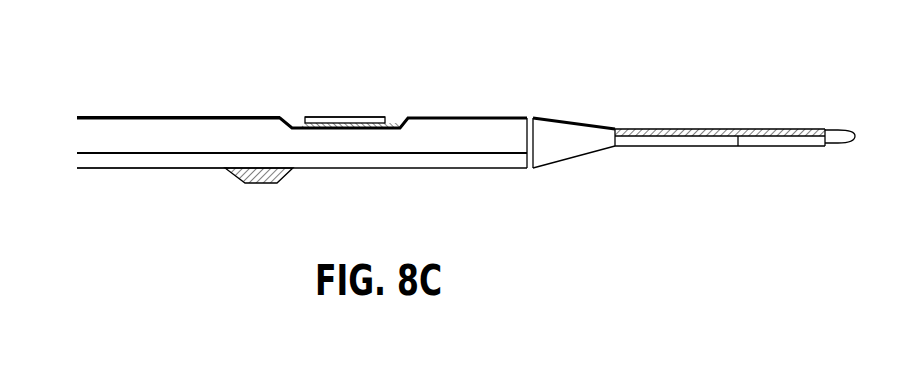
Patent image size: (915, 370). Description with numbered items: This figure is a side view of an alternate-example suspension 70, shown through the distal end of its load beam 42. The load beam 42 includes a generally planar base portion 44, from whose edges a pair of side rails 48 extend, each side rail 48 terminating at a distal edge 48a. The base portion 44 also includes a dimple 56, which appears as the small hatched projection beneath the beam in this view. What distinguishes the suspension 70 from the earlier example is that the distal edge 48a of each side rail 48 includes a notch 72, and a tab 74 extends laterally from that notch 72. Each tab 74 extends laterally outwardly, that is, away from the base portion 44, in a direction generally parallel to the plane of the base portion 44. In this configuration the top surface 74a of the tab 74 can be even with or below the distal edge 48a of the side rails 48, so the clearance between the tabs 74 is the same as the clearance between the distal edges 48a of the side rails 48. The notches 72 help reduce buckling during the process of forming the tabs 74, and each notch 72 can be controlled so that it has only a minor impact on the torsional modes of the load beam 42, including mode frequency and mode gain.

The load beam 42 is at (106, 117).
The base portion 44 is at (140, 170).
The side rails 48 is at (181, 149).
The distal edge 48a is at (212, 117).
The dimple 56 is at (270, 183).
The suspension 70 is at (576, 79).
The notch 72 is at (294, 127).
The tab 74 is at (378, 115).
The top surface 74a is at (334, 117).